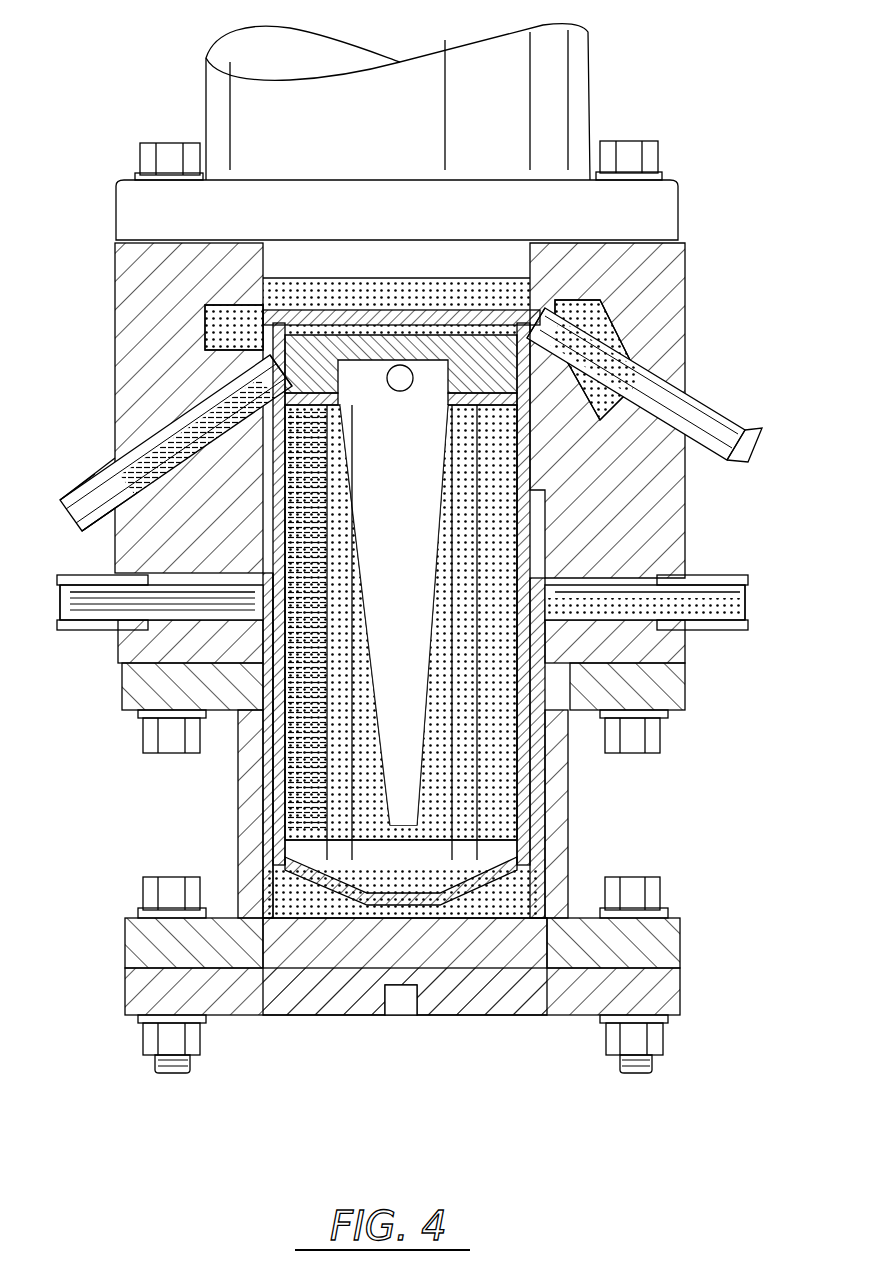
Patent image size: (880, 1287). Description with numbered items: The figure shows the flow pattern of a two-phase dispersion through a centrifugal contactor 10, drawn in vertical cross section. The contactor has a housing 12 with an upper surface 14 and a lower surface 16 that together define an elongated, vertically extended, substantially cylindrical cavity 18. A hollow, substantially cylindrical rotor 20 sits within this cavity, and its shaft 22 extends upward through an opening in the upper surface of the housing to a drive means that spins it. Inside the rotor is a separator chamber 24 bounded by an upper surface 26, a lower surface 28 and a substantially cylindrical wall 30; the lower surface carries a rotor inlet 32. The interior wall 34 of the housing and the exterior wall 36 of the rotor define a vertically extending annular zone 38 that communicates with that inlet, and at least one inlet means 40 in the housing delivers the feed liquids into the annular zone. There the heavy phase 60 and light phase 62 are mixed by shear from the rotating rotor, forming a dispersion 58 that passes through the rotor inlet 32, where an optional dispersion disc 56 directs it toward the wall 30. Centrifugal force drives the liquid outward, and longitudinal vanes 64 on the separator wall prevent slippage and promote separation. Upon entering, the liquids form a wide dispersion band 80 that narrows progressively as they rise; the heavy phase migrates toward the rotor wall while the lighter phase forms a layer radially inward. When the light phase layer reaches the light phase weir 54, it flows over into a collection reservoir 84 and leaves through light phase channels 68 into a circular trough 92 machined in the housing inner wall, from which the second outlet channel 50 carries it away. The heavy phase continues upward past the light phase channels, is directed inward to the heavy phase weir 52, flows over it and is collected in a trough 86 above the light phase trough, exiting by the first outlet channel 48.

The centrifugal contactor 10 is at (95, 347).
The housing 12 is at (775, 566).
The upper surface 14 is at (652, 262).
The lower surface 16 is at (470, 1005).
The cavity 18 is at (265, 548).
The rotor 20 is at (535, 770).
The shaft 22 is at (403, 295).
The separator chamber 24 is at (262, 712).
The upper surface 26 is at (570, 380).
The lower surface 28 is at (318, 885).
The cylindrical wall 30 is at (283, 838).
The rotor inlet 32 is at (386, 880).
The interior wall 34 is at (275, 818).
The exterior wall 36 is at (262, 770).
The annular zone 38 is at (270, 790).
The inlet means 40 is at (65, 597).
The first outlet channel 48 is at (745, 428).
The second outlet channel 50 is at (78, 482).
The heavy phase weir 52 is at (300, 370).
The light phase weir 54 is at (300, 427).
The dispersion disc 56 is at (283, 865).
The dispersion 58 is at (540, 893).
The heavy phase 60 is at (540, 555).
The light phase 62 is at (105, 612).
The longitudinal vanes 64 is at (490, 842).
The light phase channels 68 is at (300, 393).
The dispersion band 80 is at (490, 445).
The collection reservoir 84 is at (590, 365).
The trough 86 is at (220, 330).
The circular trough 92 is at (640, 408).